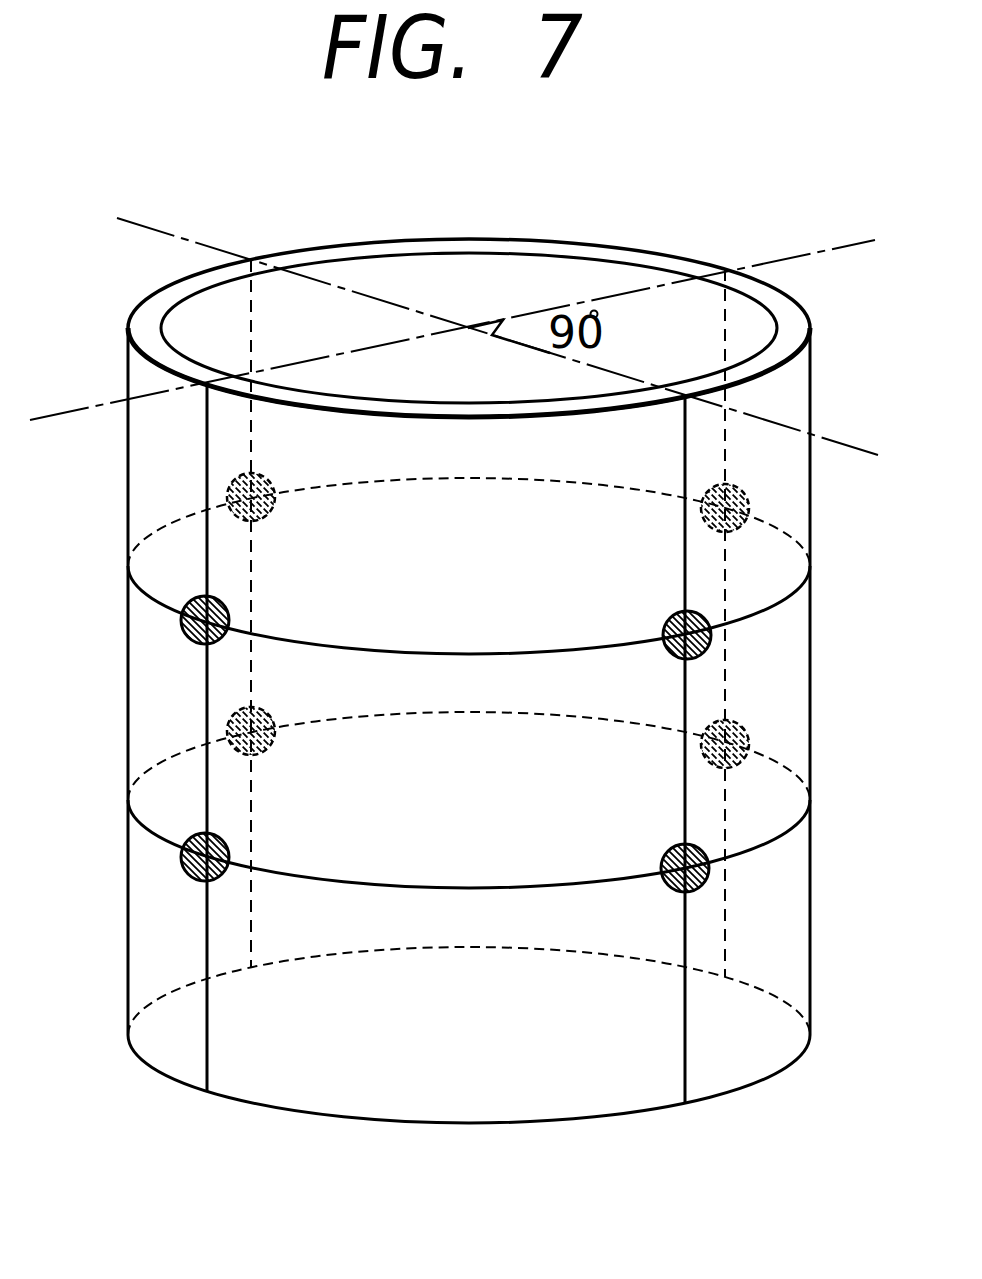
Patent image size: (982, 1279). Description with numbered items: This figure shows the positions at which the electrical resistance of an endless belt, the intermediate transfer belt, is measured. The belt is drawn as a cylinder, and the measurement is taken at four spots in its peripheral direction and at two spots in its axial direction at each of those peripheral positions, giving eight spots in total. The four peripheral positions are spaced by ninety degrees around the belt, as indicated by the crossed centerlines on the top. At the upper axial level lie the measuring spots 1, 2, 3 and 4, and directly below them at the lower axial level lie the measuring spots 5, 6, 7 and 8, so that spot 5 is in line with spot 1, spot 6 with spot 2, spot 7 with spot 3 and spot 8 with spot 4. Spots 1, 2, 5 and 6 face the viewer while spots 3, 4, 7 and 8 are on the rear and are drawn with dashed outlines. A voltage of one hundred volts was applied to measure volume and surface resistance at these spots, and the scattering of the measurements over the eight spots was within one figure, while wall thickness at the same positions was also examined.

The resistance measuring spot 1 is at (193, 636).
The resistance measuring spot 2 is at (674, 653).
The resistance measuring spot 3 is at (735, 530).
The resistance measuring spot 4 is at (262, 511).
The resistance measuring spot 5 is at (199, 879).
The resistance measuring spot 6 is at (681, 890).
The resistance measuring spot 7 is at (733, 768).
The resistance measuring spot 8 is at (259, 752).